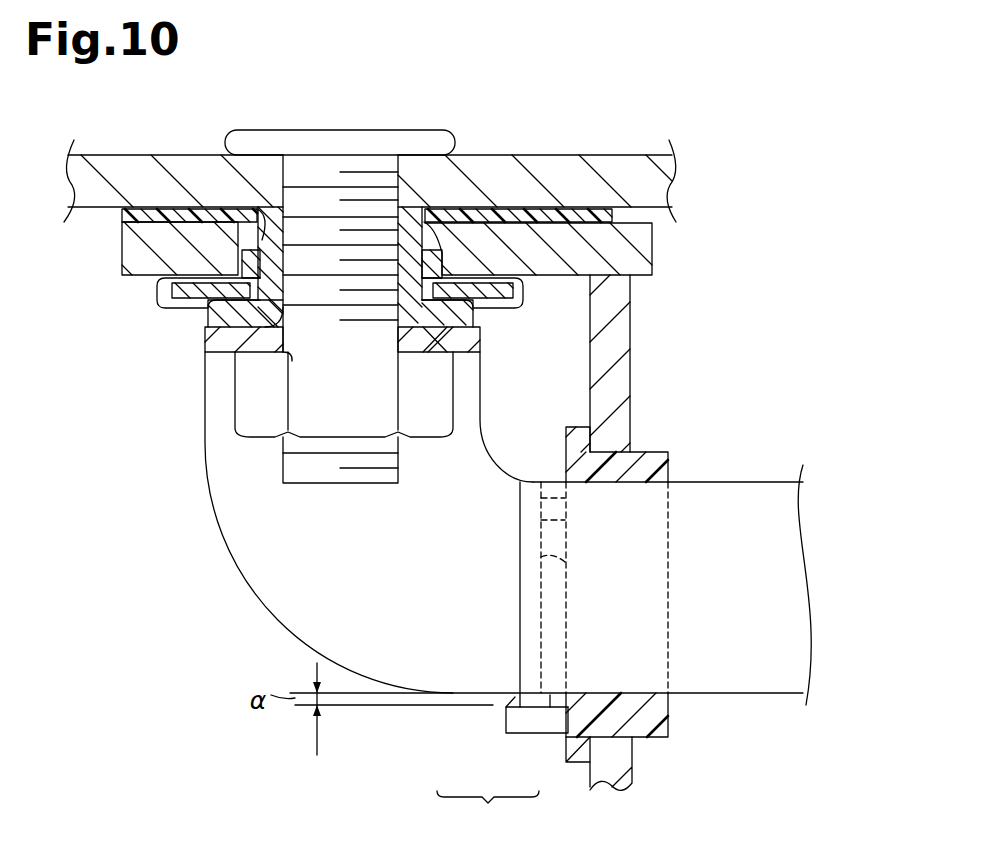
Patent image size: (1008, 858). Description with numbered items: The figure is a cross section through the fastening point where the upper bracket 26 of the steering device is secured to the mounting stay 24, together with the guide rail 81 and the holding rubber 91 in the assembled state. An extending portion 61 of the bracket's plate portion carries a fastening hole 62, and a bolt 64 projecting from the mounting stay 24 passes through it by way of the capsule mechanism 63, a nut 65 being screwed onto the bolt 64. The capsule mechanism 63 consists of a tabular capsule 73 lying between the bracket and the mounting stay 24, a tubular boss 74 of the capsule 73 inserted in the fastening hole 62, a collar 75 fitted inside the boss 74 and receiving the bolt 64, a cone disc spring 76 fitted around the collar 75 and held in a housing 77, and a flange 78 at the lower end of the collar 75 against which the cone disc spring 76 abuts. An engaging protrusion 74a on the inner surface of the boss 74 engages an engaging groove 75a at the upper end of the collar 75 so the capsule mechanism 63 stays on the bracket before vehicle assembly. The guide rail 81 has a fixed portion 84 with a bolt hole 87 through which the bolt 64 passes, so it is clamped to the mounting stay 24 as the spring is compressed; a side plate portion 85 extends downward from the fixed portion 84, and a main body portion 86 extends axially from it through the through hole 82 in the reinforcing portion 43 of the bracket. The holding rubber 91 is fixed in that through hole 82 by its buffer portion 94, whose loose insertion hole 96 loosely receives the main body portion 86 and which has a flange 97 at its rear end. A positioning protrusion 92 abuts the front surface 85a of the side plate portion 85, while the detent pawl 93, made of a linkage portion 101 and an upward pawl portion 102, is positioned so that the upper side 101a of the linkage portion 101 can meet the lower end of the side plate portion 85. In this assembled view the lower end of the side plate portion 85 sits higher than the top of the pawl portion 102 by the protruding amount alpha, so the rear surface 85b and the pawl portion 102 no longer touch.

The mounting stay 24 is at (127, 168).
The upper bracket 26 is at (594, 206).
The reinforcing portion 43 is at (628, 352).
The extending portion 61 is at (128, 247).
The fastening hole 62 is at (232, 212).
The capsule mechanism 63 is at (462, 200).
The bolt 64 is at (321, 140).
The nut 65 is at (320, 427).
The capsule 73 is at (612, 218).
The boss 74 is at (430, 243).
The engaging protrusion 74a is at (264, 222).
The collar 75 is at (480, 335).
The engaging groove 75a is at (438, 208).
The cone disc spring 76 is at (490, 306).
The housing 77 is at (527, 292).
The flange 78 is at (433, 332).
The guide rail 81 is at (493, 418).
The through hole 82 is at (625, 462).
The fixed portion 84 is at (207, 333).
The side plate portion 85 is at (527, 492).
The front surface 85a is at (565, 563).
The rear surface 85b is at (518, 648).
The main body portion 86 is at (757, 695).
The bolt hole 87 is at (290, 360).
The holding rubber 91 is at (696, 433).
The positioning protrusion 92 is at (541, 512).
The detent pawl 93 is at (488, 813).
The buffer portion 94 is at (657, 730).
The loose insertion hole 96 is at (630, 483).
The flange 97 is at (572, 753).
The linkage portion 101 is at (535, 727).
The upper side 101a is at (550, 705).
The pawl portion 102 is at (517, 700).